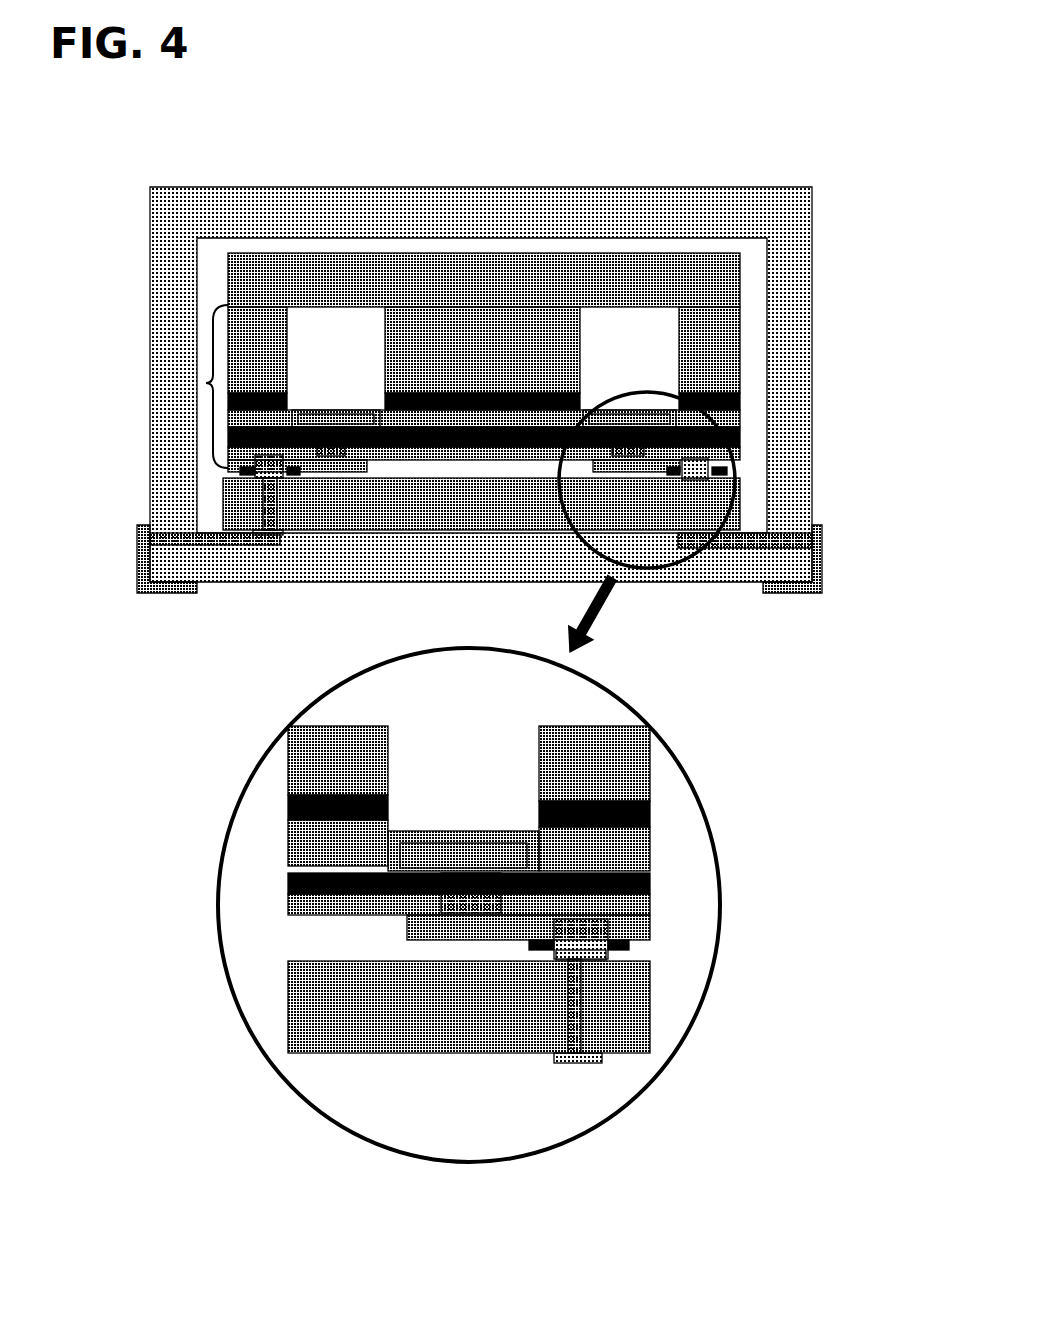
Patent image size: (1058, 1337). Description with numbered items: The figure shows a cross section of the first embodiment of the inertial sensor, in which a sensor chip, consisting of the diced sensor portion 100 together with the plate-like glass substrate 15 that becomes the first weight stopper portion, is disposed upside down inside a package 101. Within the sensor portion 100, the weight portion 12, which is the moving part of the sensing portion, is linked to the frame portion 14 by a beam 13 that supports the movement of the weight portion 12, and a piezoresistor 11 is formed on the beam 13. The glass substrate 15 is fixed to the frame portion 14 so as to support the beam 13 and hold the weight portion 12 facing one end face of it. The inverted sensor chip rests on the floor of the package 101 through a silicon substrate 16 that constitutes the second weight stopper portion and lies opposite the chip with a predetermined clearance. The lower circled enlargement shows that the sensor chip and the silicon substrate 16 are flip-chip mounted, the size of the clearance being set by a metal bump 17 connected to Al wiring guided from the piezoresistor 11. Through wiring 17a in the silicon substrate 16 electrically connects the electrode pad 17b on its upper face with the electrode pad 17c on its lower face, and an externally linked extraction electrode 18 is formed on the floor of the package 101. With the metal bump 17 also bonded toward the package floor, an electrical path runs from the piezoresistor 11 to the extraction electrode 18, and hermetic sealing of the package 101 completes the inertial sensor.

The piezoresistor 11 is at (618, 436).
The weight portion 12 is at (531, 345).
The beam 13 is at (347, 405).
The frame portion 14 is at (272, 382).
The glass substrate 15 is at (297, 272).
The silicon substrate 16 is at (318, 510).
The metal bump 17 is at (590, 932).
The through wiring 17a is at (565, 1000).
The electrode pad 17b is at (602, 953).
The electrode pad 17c is at (584, 1064).
The extraction electrode 18 is at (732, 547).
The sensor portion 100 is at (203, 381).
The package 101 is at (813, 363).